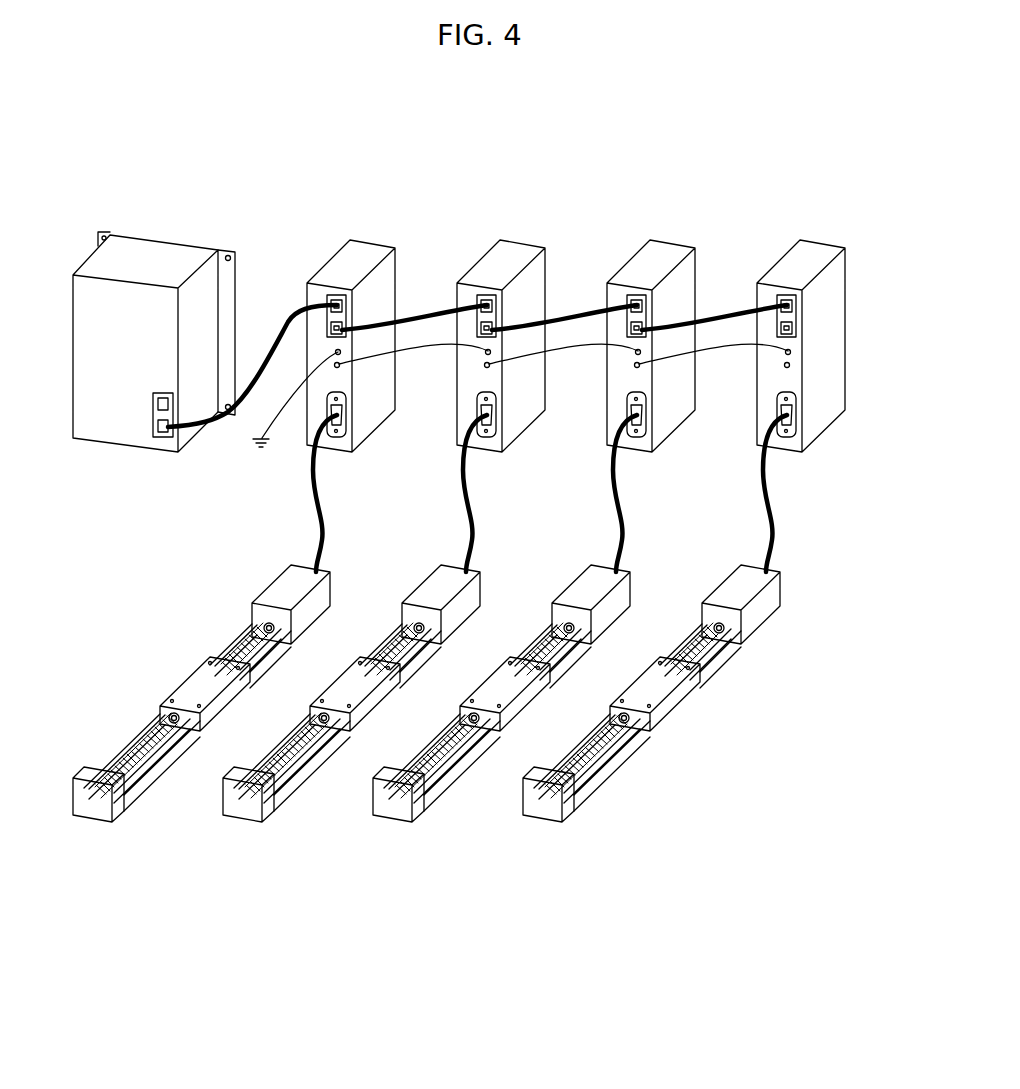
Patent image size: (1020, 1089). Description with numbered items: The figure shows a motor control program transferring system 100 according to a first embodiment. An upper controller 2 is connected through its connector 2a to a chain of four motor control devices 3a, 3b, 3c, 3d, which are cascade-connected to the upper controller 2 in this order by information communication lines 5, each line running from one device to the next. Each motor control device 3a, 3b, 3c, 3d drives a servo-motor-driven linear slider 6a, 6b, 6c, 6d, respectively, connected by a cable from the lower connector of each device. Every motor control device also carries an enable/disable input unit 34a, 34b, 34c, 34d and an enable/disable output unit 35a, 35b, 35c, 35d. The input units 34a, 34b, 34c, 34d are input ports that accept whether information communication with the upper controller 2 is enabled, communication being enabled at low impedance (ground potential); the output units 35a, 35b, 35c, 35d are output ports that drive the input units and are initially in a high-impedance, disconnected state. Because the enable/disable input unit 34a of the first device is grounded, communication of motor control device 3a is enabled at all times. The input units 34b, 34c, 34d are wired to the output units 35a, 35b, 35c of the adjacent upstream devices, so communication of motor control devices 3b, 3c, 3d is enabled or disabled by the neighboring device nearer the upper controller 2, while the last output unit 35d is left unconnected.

The upper controller 2 is at (163, 240).
The controller connector 2a is at (160, 438).
The motor control device 3a is at (362, 240).
The motor control device 3b is at (512, 240).
The motor control device 3c is at (662, 240).
The motor control device 3d is at (812, 240).
The information communication line 5 is at (286, 324).
The enable/disable input unit 34a is at (343, 352).
The enable/disable input unit 34b is at (493, 352).
The enable/disable input unit 34c is at (643, 352).
The enable/disable input unit 34d is at (793, 352).
The enable/disable output unit 35a is at (341, 366).
The enable/disable output unit 35b is at (491, 366).
The enable/disable output unit 35c is at (641, 366).
The enable/disable output unit 35d is at (791, 366).
The linear slider 6a is at (95, 820).
The linear slider 6b is at (245, 820).
The linear slider 6c is at (395, 820).
The linear slider 6d is at (545, 820).
The motor control program transferring system 100 is at (677, 851).